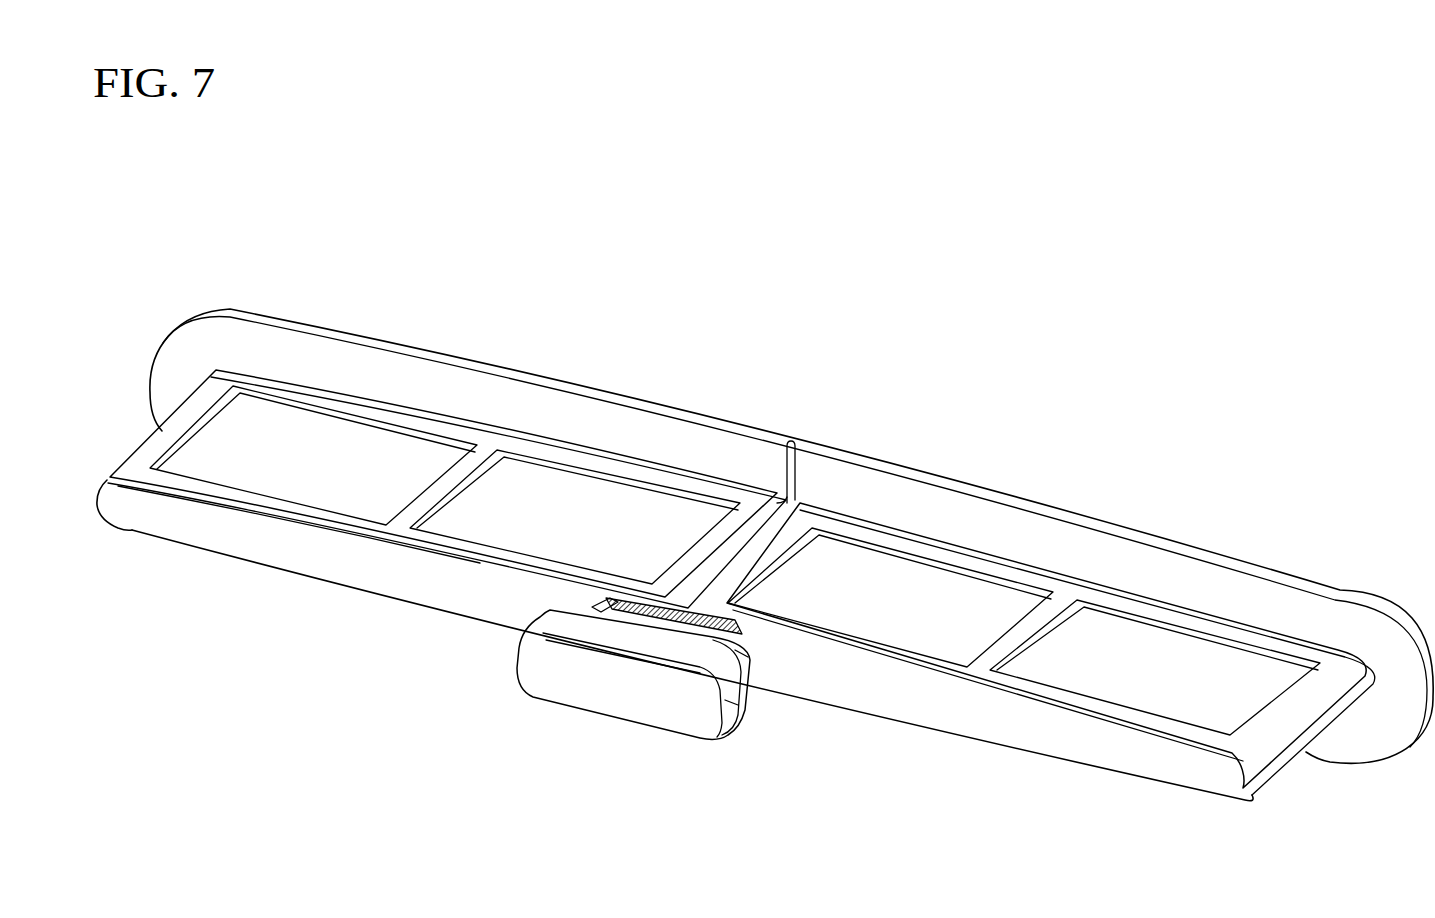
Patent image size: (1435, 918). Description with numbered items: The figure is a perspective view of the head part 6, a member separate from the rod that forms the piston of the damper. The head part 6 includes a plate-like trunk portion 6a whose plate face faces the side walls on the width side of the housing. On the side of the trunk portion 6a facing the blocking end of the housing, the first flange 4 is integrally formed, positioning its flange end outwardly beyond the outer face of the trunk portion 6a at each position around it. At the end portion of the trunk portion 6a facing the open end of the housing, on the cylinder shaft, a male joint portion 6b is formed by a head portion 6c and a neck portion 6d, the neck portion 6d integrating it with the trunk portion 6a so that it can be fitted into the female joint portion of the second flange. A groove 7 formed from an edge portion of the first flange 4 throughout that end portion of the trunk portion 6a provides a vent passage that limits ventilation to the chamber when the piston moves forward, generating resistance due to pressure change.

The first flange 4 is at (1252, 593).
The head part 6 is at (935, 597).
The trunk portion 6a is at (1113, 633).
The male joint portion 6b is at (567, 690).
The head portion 6c is at (682, 717).
The neck portion 6d is at (627, 608).
The groove 7 is at (735, 553).